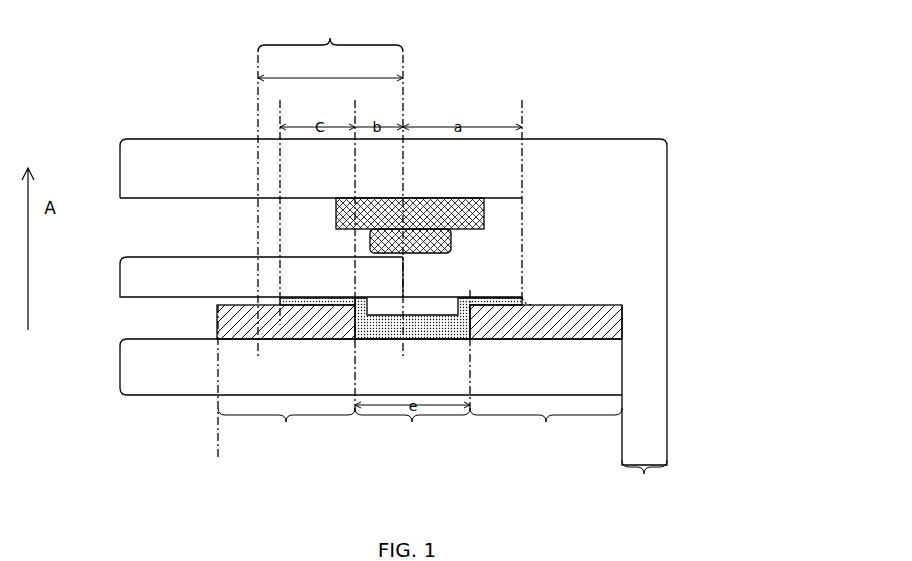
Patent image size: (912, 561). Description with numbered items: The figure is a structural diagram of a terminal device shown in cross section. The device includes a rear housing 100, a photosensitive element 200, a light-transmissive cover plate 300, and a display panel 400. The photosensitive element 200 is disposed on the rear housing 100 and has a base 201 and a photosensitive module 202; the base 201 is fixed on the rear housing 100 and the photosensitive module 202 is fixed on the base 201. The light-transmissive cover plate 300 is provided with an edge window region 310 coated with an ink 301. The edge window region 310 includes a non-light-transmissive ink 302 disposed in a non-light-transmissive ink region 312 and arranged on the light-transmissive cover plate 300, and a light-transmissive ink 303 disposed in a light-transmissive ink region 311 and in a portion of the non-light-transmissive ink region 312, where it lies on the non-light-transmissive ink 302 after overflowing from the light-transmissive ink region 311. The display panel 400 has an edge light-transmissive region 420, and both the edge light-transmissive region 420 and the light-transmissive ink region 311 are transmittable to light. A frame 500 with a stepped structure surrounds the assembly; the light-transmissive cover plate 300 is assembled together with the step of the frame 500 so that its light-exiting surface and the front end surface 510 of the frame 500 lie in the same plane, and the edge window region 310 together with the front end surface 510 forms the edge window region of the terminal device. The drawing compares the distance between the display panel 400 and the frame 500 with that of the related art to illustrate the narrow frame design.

The rear housing 100 is at (150, 155).
The photosensitive element 200 is at (573, 267).
The base 201 is at (467, 213).
The photosensitive module 202 is at (450, 245).
The light-transmissive cover plate 300 is at (145, 388).
The ink 301 is at (506, 367).
The non-light-transmissive ink 302 is at (505, 318).
The light-transmissive ink 303 is at (420, 330).
The edge window region 310 is at (420, 454).
The light-transmissive ink region 311 is at (412, 429).
The non-light-transmissive ink region 312 is at (622, 458).
The display panel 400 is at (127, 278).
The edge light-transmissive region 420 is at (330, 185).
The frame 500 is at (658, 258).
The front end surface 510 is at (644, 480).